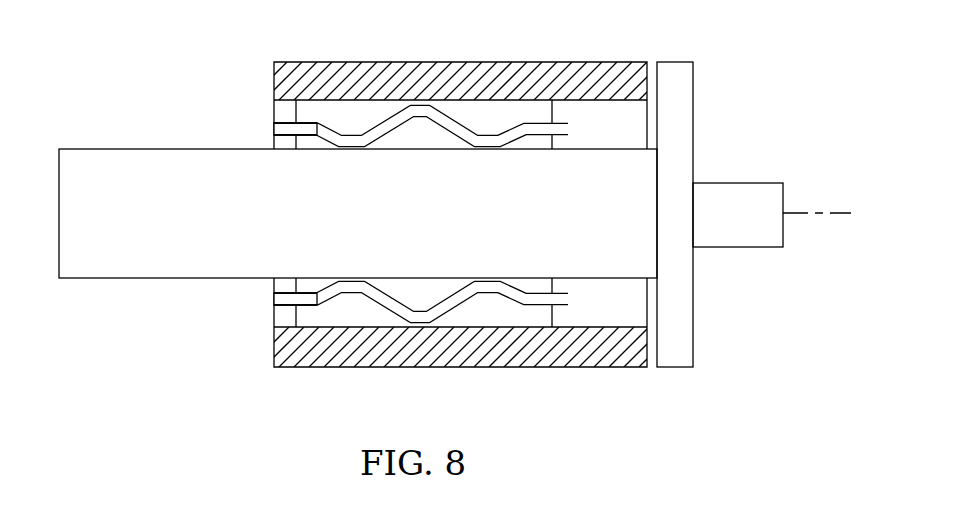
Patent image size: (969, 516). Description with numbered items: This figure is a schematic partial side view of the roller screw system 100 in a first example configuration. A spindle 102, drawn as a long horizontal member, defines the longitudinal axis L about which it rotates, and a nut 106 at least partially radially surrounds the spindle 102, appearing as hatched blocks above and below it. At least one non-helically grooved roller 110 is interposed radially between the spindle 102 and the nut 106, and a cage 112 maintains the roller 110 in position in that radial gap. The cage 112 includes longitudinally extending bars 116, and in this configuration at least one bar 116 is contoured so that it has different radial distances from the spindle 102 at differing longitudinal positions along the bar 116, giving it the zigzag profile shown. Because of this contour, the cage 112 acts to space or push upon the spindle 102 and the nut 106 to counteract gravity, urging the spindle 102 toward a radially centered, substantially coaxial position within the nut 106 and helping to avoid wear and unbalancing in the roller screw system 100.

The roller screw system 100 is at (735, 45).
The spindle 102 is at (157, 227).
The nut 106 is at (548, 62).
The roller 110 is at (492, 112).
The cage 112 is at (345, 296).
The bar 116 is at (274, 133).